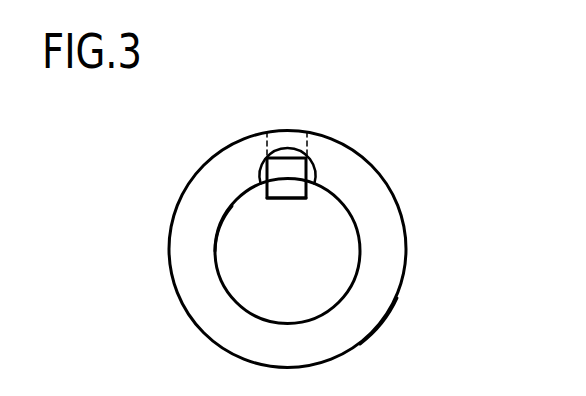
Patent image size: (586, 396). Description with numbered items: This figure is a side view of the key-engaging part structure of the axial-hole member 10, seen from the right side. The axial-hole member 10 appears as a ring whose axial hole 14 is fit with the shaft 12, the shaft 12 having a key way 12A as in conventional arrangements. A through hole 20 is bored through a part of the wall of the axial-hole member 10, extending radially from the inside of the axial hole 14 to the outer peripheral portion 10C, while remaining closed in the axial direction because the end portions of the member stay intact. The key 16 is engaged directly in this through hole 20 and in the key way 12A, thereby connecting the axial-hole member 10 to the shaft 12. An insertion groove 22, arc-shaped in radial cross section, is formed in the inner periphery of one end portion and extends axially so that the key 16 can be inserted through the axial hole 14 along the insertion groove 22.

The axial-hole member 10 is at (385, 270).
The outer peripheral portion 10C is at (398, 298).
The shaft 12 is at (338, 249).
The key way 12A is at (273, 193).
The axial hole 14 is at (216, 262).
The key 16 is at (266, 186).
The through hole 20 is at (268, 132).
The insertion groove 22 is at (302, 155).